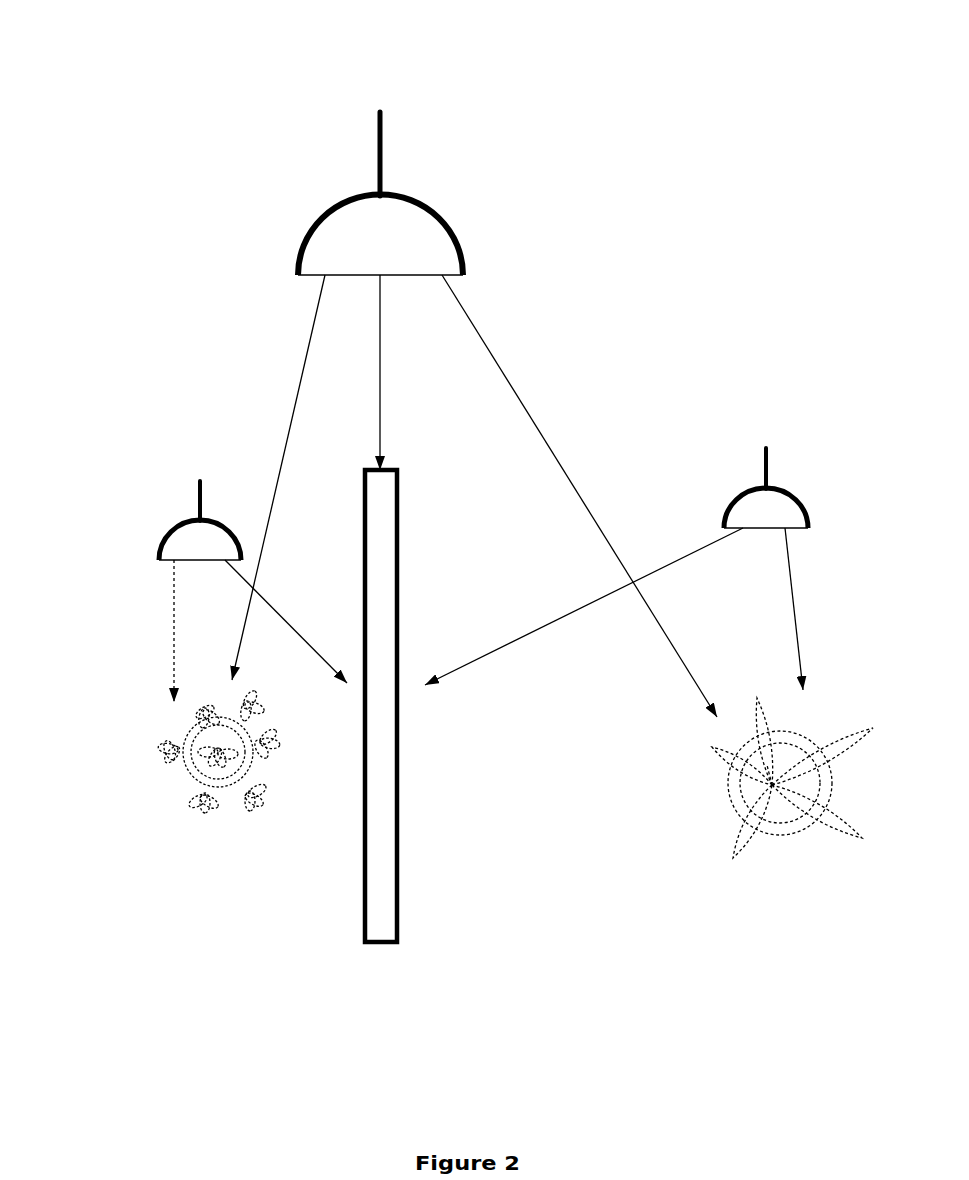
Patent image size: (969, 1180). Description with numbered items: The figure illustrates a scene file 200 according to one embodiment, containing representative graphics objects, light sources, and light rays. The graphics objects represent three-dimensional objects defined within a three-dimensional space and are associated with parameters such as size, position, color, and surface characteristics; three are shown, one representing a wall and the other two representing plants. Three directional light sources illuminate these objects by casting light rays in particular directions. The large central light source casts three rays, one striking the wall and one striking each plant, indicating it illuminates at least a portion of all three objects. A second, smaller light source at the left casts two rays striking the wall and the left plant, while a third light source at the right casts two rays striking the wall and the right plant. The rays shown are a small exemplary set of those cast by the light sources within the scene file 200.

The scene file 200 is at (416, 62).